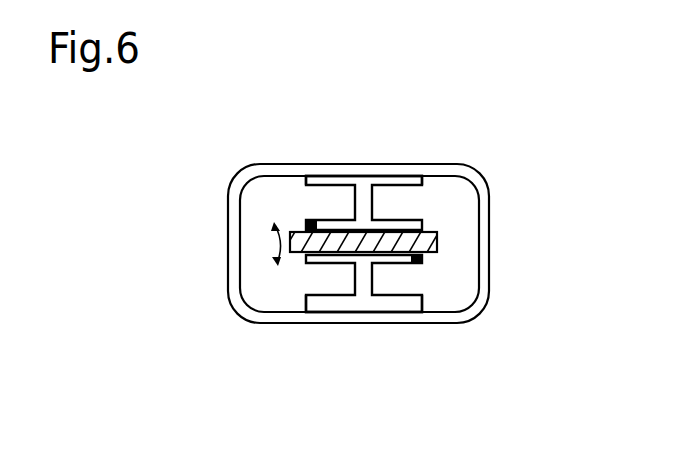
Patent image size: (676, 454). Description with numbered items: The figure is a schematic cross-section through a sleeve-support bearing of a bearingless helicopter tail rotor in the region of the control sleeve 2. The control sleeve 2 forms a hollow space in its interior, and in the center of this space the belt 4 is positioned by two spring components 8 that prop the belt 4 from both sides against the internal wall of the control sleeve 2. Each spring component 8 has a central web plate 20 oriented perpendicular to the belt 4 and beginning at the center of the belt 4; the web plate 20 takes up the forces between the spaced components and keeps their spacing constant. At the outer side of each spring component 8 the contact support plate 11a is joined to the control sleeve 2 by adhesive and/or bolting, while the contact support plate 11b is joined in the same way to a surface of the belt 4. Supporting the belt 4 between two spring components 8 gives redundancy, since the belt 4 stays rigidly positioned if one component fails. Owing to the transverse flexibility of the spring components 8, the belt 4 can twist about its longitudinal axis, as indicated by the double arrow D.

The control sleeve 2 is at (462, 173).
The belt 4 is at (440, 228).
The spring component 8 is at (284, 192).
The contact support plate 11a is at (315, 180).
The contact support plate 11b is at (308, 224).
The web plate 20 is at (367, 238).
The double arrow D is at (270, 240).